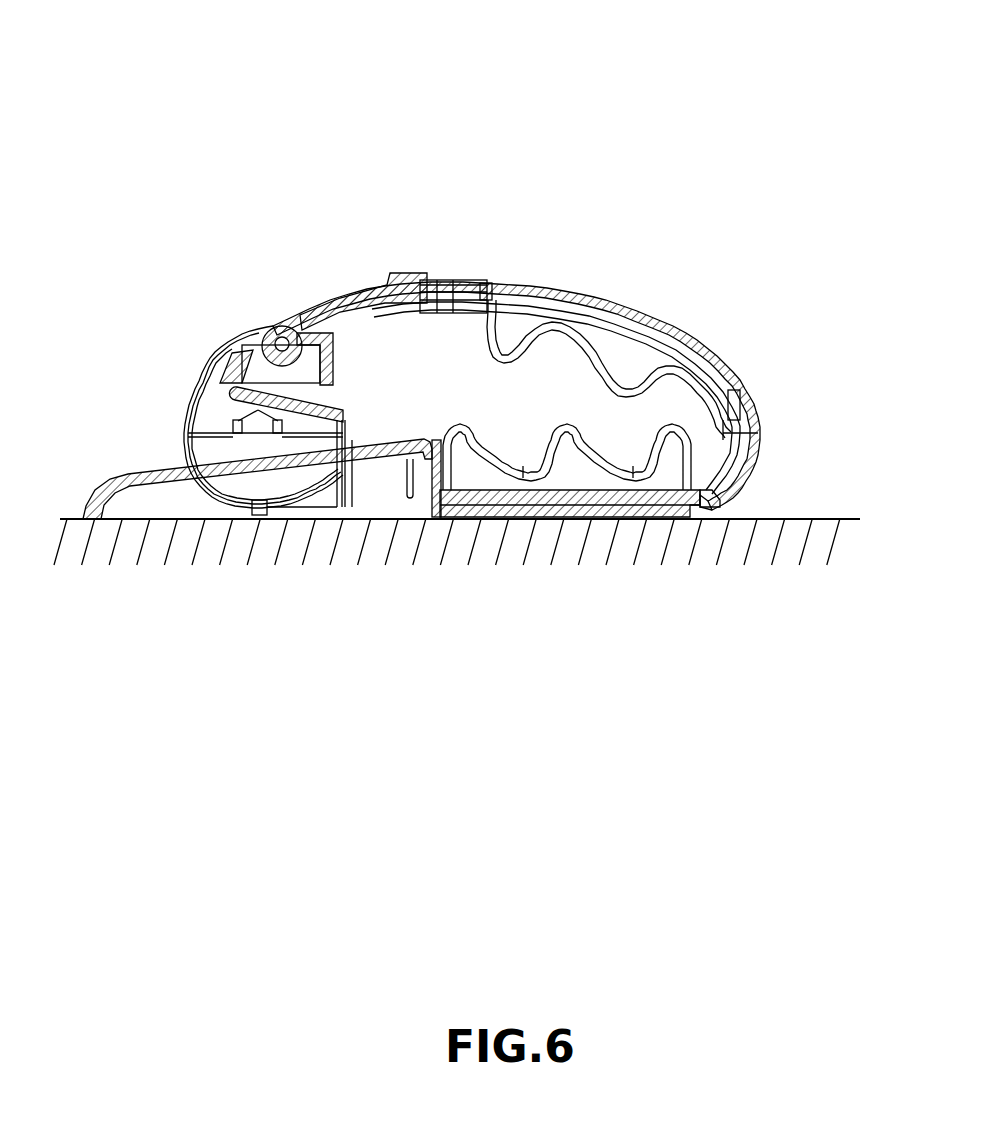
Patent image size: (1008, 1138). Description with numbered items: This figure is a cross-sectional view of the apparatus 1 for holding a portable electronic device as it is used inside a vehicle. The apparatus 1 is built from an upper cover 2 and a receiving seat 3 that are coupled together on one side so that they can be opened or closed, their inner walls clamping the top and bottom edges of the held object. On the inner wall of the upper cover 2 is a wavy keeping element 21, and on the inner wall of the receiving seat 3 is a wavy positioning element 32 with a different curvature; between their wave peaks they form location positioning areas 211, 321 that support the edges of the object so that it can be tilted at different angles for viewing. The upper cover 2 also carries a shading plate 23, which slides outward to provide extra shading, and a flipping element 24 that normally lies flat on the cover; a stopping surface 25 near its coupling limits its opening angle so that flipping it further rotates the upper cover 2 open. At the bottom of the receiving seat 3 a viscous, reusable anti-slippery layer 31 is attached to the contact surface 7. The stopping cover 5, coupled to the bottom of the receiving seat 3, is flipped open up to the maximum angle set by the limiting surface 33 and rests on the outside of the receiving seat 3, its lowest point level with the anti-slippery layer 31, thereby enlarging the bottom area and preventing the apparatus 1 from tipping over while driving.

The apparatus for holding portable electronic device 1 is at (432, 160).
The upper cover 2 is at (460, 300).
The keeping element 21 is at (547, 300).
The location positioning areas 211 is at (575, 333).
The shading plate 23 is at (612, 304).
The flipping element 24 is at (337, 293).
The stopping surface 25 is at (248, 353).
The receiving seat 3 is at (690, 473).
The anti-slippery layer 31 is at (447, 520).
The positioning element 32 is at (483, 473).
The location positioning areas 321 is at (605, 468).
The limiting surface 33 is at (365, 522).
The stopping cover 5 is at (167, 470).
The contact surface 7 is at (747, 519).